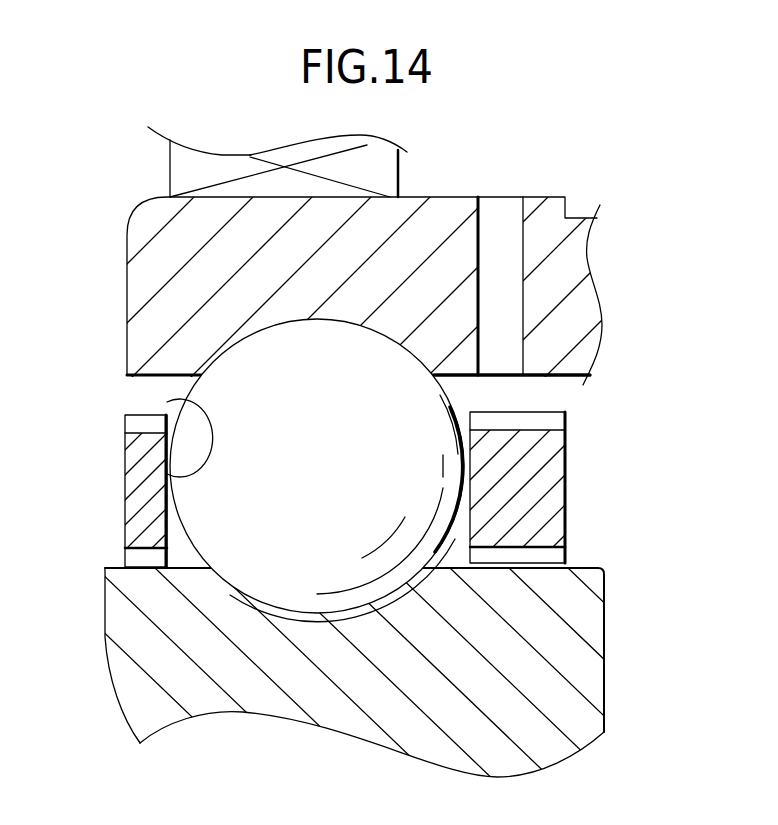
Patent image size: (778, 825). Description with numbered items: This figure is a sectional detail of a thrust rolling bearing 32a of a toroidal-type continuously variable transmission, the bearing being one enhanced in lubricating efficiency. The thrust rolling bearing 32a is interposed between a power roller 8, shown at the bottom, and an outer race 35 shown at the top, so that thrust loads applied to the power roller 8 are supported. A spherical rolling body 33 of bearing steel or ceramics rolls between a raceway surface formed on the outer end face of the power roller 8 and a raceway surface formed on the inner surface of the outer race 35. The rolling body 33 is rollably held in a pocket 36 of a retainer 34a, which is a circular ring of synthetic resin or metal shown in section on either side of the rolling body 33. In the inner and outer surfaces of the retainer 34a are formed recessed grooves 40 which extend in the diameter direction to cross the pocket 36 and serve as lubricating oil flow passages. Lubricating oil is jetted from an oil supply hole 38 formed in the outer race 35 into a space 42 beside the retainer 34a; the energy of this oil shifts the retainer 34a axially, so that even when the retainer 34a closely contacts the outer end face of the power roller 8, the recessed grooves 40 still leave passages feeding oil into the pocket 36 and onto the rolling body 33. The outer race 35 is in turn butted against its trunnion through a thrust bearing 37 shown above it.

The power roller 8 is at (110, 608).
The thrust rolling bearing 32a is at (388, 372).
The rolling body 33 is at (150, 499).
The retainer 34a is at (552, 483).
The outer race 35 is at (141, 255).
The pocket 36 is at (168, 399).
The thrust bearing 37 is at (183, 162).
The oil supply hole 38 is at (522, 230).
The recessed groove 40 is at (130, 427).
The space 42 is at (500, 397).